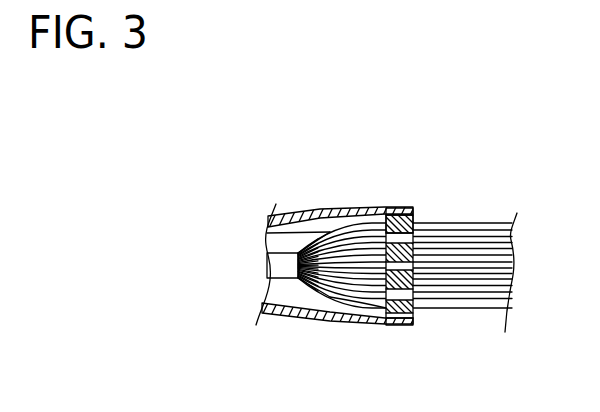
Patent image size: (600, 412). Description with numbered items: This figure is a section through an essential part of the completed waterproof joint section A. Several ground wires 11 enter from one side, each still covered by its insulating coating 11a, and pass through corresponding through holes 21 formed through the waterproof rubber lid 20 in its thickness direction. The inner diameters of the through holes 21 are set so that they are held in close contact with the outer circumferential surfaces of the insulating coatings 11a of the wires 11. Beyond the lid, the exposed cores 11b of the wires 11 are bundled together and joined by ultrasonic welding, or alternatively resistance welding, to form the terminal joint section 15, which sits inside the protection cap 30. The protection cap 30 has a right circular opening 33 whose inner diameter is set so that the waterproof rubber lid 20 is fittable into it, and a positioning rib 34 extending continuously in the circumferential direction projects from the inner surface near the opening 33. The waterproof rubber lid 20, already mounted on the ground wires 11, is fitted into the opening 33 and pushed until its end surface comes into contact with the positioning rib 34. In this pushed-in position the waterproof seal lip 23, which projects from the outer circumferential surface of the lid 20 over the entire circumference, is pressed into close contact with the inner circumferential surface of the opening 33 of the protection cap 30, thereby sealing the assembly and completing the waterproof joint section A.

The waterproof joint section A is at (306, 205).
The ground wires 11 is at (502, 228).
The insulating coatings 11a is at (462, 227).
The exposed cores 11b is at (332, 297).
The terminal joint section 15 is at (278, 273).
The waterproof rubber lid 20 is at (419, 312).
The through holes 21 is at (413, 236).
The waterproof seal lip 23 is at (393, 209).
The protection cap 30 is at (372, 203).
The opening 33 is at (416, 211).
The positioning rib 34 is at (357, 208).